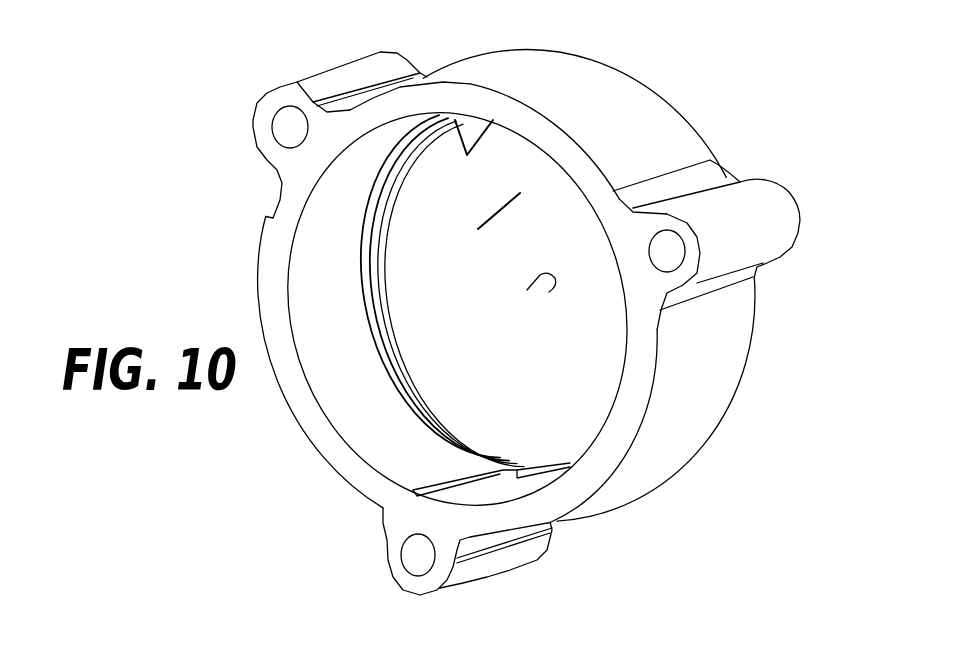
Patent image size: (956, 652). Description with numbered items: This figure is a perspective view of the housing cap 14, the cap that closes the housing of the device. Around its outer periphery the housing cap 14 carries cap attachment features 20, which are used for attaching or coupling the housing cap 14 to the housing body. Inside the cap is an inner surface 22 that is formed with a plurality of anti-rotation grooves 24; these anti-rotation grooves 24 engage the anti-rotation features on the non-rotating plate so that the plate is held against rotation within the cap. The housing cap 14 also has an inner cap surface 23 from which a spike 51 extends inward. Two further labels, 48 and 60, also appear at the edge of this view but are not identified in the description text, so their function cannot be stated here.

The housing cap 14 is at (597, 61).
The cap attachment features 20 is at (763, 223).
The inner surface 22 is at (320, 252).
The inner cap surface 23 is at (478, 229).
The anti-rotation grooves 24 is at (465, 153).
The spike 51 is at (546, 283).
The component 48 is at (306, 1).
The component 60 is at (166, 5).